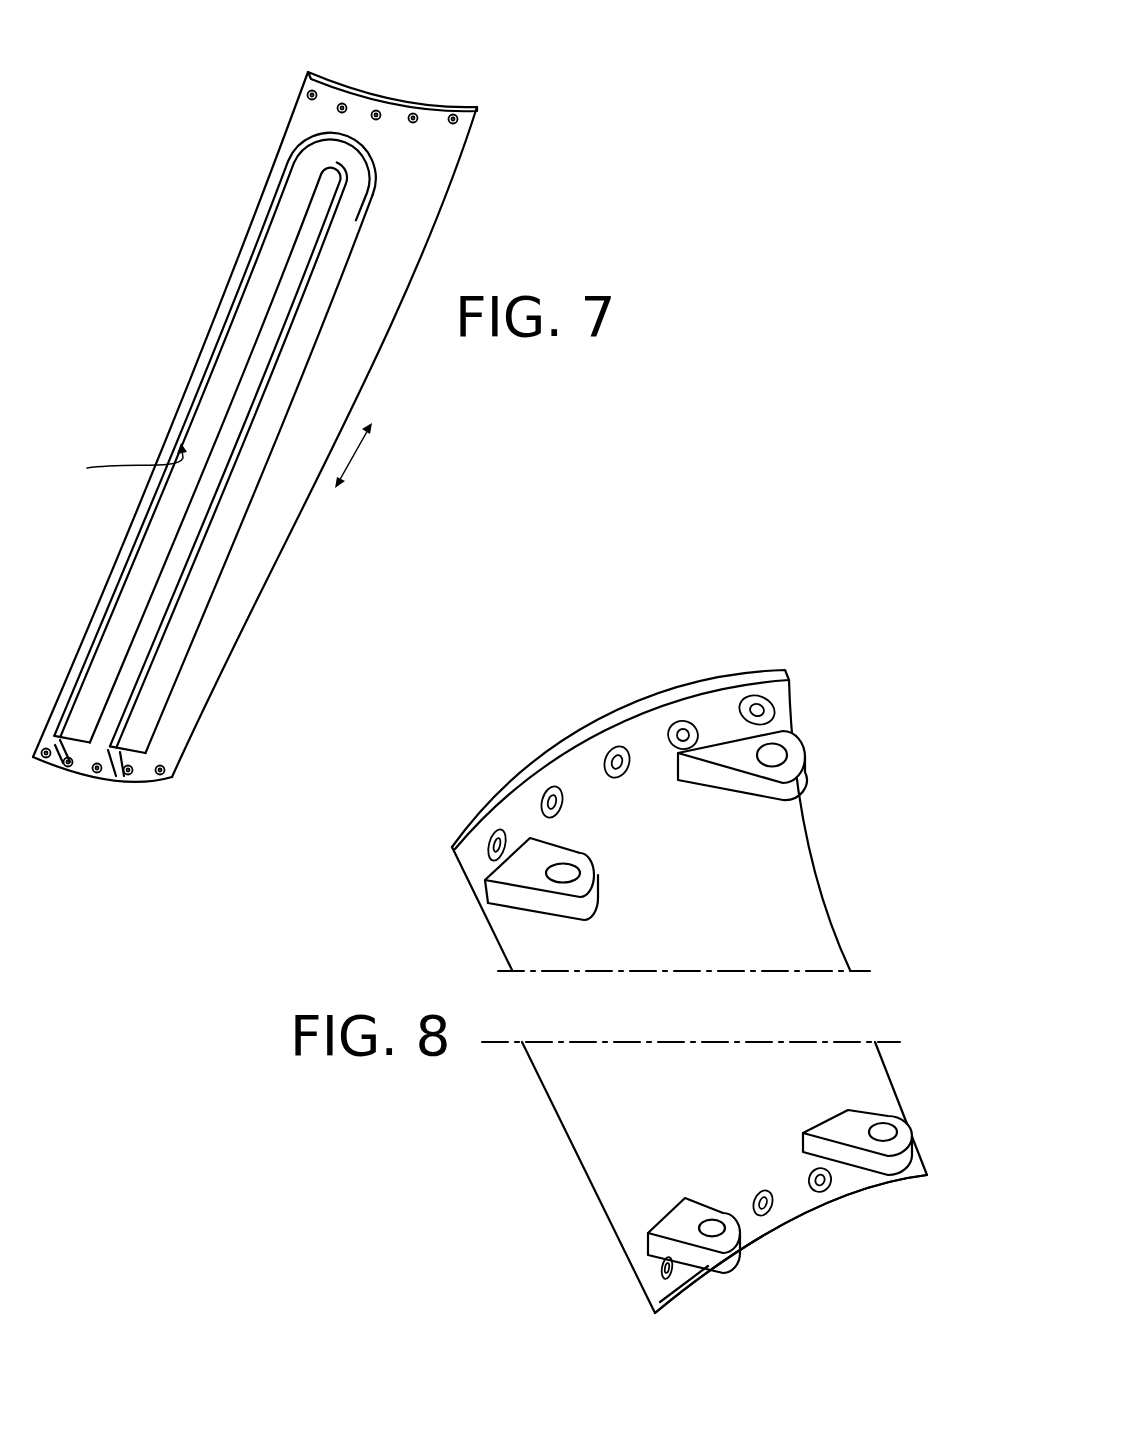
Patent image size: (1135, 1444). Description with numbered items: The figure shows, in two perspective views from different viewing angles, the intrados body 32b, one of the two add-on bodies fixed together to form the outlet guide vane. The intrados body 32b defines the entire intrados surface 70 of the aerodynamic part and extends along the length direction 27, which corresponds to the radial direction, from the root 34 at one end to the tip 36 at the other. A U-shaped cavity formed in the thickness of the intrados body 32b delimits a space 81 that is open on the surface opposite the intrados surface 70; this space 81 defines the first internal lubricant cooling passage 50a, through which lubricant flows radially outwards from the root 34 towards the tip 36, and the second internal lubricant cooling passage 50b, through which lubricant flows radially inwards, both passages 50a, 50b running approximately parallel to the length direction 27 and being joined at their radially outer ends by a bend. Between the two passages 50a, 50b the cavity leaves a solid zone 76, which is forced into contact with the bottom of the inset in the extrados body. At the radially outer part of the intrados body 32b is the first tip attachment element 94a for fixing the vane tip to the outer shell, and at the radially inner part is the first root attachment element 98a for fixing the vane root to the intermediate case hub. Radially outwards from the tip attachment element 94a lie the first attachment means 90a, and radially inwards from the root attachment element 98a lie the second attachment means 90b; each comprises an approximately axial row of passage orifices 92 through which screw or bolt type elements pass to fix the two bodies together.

In FIG. 7, the intrados body 32b is at (470, 91).
In FIG. 8, the intrados body 32b is at (753, 649).
In FIG. 7, the intrados surface 70 is at (387, 97).
In FIG. 8, the intrados surface 70 is at (748, 897).
In FIG. 7, the tip 36 is at (443, 135).
In FIG. 8, the tip 36 is at (780, 712).
In FIG. 7, the root 34 is at (142, 782).
In FIG. 8, the root 34 is at (917, 1167).
In FIG. 7, the first attachment means 90a is at (323, 40).
In FIG. 8, the first attachment means 90a is at (670, 623).
In FIG. 8, the second attachment means 90b is at (482, 1133).
In FIG. 7, the passage orifices 92 is at (374, 111).
In FIG. 8, the passage orifices 92 is at (753, 707).
In FIG. 7, the first internal lubricant cooling passage 50a is at (315, 327).
In FIG. 7, the second internal lubricant cooling passage 50b is at (272, 277).
In FIG. 7, the solid zone 76 is at (302, 247).
In FIG. 7, the space 81 is at (117, 463).
In FIG. 7, the length direction 27 is at (350, 462).
In FIG. 8, the first tip attachment element 94a is at (772, 739).
In FIG. 8, the first root attachment element 98a is at (853, 1127).